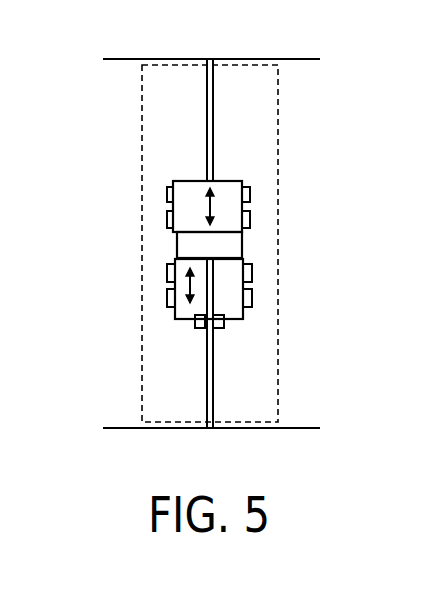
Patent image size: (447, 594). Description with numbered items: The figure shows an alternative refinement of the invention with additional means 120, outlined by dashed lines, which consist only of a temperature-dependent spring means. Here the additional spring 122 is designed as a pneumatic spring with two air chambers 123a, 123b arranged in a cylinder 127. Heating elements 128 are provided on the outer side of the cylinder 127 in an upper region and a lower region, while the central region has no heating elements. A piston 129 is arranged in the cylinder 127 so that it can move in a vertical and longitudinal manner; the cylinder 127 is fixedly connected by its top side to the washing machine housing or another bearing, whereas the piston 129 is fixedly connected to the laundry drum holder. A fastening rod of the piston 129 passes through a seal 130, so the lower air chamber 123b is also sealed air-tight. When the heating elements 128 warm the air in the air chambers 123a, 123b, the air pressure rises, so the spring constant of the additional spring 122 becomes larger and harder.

The additional means 120 is at (278, 98).
The additional spring 122 is at (265, 242).
The upper air chamber 123a is at (222, 186).
The lower air chamber 123b is at (233, 313).
The cylinder 127 is at (250, 205).
The heating elements 128 is at (167, 193).
The piston 129 is at (243, 247).
The seal 130 is at (218, 321).